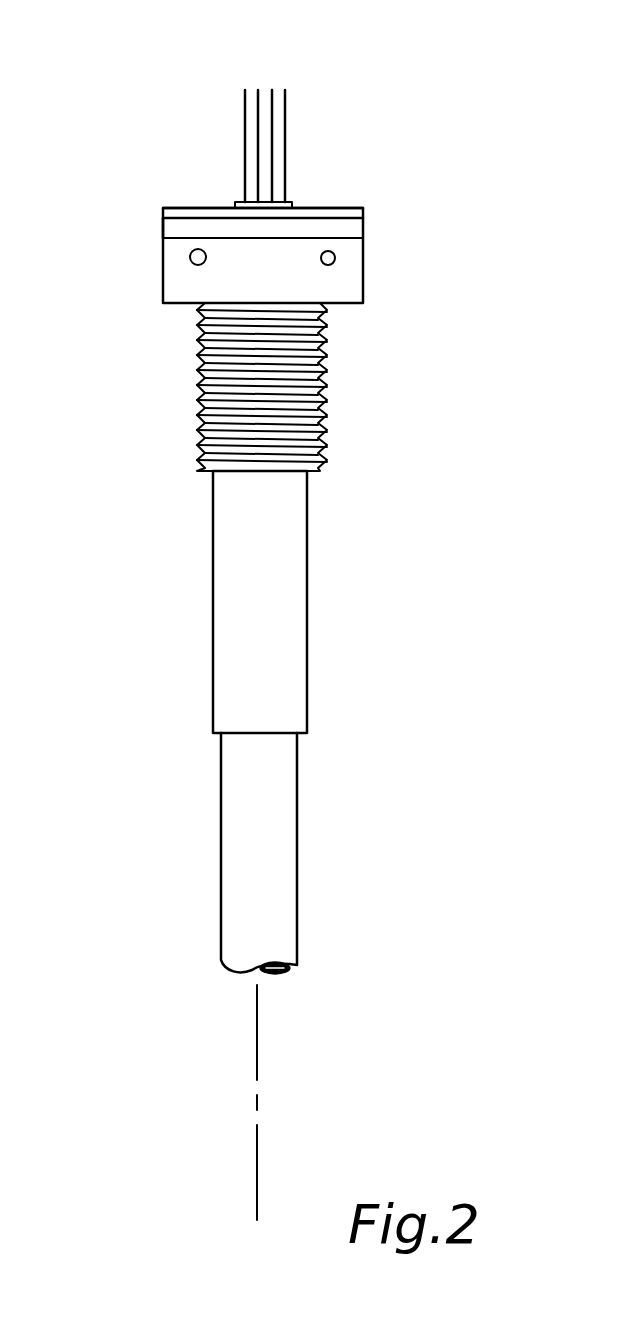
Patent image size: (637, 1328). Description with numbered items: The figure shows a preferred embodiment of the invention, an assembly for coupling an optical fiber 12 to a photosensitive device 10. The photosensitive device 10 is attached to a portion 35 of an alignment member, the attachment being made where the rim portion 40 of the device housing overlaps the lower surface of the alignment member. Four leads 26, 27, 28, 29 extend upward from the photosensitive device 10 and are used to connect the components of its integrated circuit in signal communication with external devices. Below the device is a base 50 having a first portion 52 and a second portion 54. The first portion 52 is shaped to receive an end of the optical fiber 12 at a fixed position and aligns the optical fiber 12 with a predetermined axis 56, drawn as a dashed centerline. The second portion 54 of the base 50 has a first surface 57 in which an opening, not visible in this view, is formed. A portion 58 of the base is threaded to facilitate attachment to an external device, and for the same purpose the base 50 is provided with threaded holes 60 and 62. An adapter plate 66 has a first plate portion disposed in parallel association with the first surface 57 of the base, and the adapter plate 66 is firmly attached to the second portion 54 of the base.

The photosensitive device 10 is at (233, 195).
The optical fiber 12 is at (283, 790).
The lead 26 is at (287, 125).
The lead 27 is at (272, 97).
The lead 28 is at (258, 97).
The lead 29 is at (245, 100).
The portion of the alignment member 35 is at (346, 208).
The rim portion 40 is at (292, 207).
The base 50 is at (355, 282).
The first portion 52 is at (293, 663).
The second portion 54 is at (350, 240).
The predetermined axis 56 is at (257, 1040).
The first surface 57 is at (163, 232).
The threaded portion 58 is at (331, 387).
The threaded hole 60 is at (192, 262).
The threaded hole 62 is at (330, 265).
The adapter plate 66 is at (168, 224).